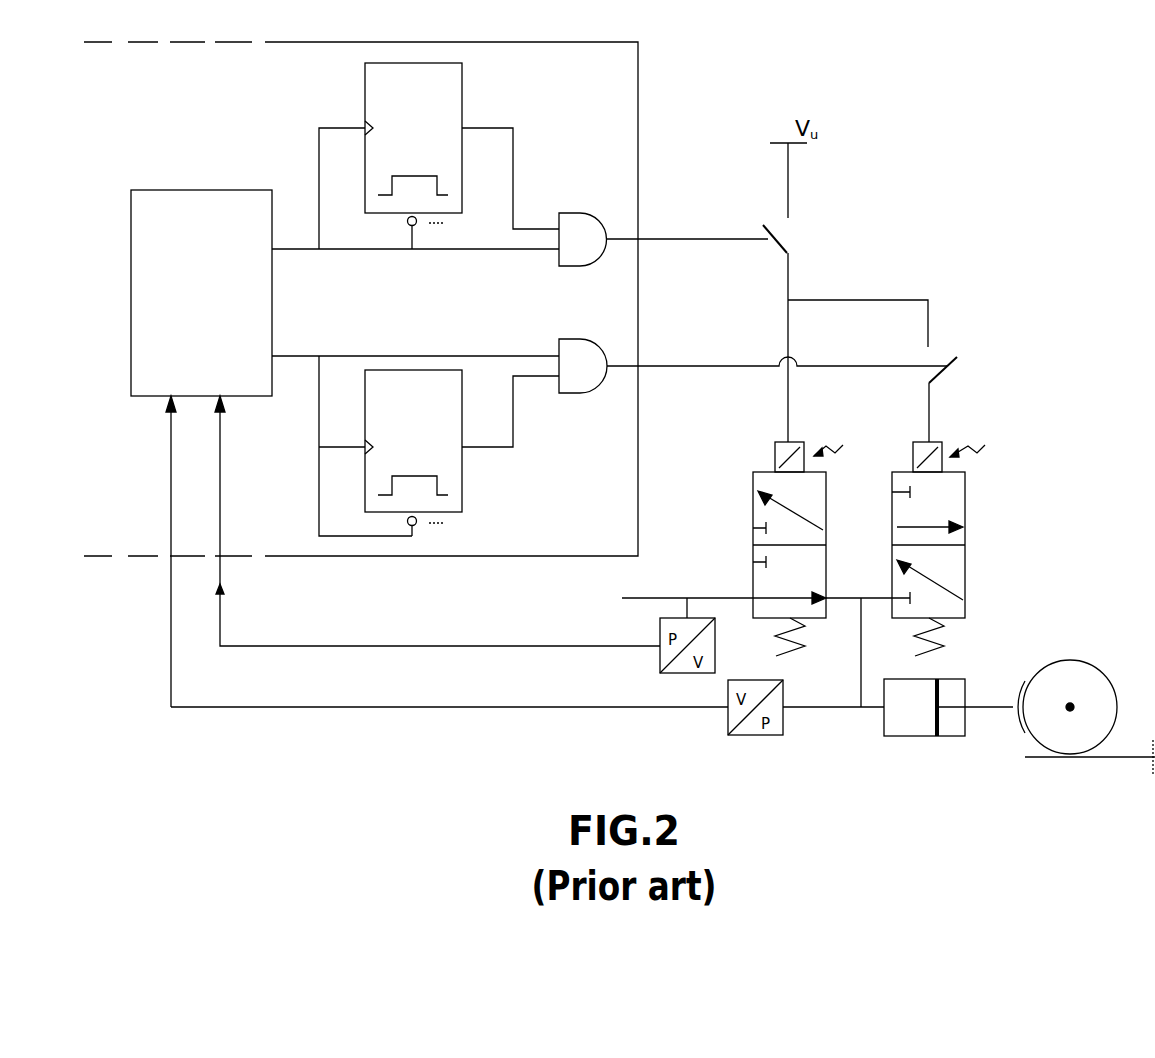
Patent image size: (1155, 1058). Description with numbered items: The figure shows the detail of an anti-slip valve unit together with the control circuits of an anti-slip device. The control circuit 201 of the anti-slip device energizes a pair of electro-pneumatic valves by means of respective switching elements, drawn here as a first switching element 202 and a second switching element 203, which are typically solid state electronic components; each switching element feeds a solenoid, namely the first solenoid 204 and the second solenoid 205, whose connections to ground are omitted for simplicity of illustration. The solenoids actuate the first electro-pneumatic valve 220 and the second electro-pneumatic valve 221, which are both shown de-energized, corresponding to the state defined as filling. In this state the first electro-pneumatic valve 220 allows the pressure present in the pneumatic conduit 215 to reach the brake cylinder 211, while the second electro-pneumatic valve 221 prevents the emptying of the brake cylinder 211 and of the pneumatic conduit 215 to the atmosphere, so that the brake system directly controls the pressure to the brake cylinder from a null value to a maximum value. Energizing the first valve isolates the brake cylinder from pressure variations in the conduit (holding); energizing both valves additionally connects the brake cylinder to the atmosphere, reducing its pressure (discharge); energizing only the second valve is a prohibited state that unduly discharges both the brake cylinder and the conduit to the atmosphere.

The control unit 201 is at (610, 83).
The first switch 202 is at (780, 236).
The second switch 203 is at (960, 365).
The first solenoid 204 is at (772, 448).
The second solenoid 205 is at (913, 448).
The brake actuator 211 is at (902, 722).
The pressure line 215 is at (622, 598).
The first valve 220 is at (752, 510).
The second valve 221 is at (962, 505).